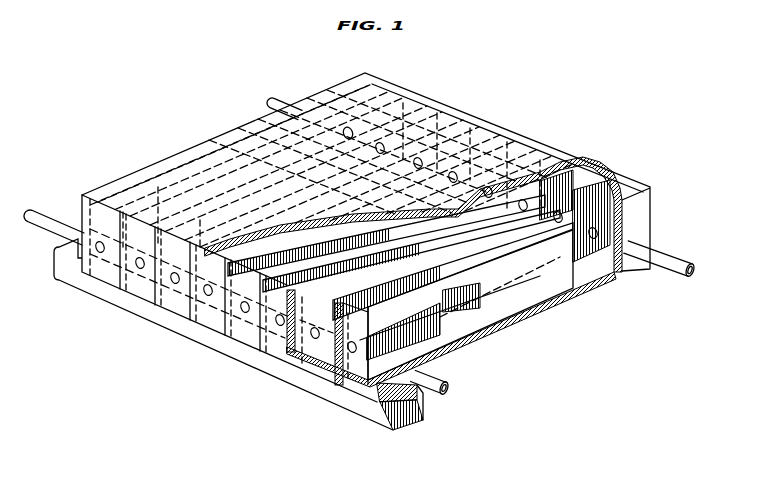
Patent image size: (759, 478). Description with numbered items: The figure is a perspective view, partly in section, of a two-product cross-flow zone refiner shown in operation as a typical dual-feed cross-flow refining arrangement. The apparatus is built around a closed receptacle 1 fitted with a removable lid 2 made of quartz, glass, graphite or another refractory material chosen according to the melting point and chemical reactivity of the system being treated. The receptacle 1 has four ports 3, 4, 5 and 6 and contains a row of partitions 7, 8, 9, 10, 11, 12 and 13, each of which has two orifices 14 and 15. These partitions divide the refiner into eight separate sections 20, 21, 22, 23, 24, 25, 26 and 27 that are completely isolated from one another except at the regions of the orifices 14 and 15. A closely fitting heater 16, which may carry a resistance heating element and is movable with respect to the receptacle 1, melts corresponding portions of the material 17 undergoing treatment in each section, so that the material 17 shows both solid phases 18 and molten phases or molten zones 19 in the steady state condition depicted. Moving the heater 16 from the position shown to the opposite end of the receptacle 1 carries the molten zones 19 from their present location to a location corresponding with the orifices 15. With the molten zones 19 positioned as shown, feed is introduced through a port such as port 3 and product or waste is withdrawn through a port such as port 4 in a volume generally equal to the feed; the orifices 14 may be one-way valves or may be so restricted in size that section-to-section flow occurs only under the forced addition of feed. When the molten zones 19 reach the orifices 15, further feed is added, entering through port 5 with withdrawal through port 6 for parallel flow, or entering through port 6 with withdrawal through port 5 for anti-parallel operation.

The closed receptacle 1 is at (652, 212).
The removable lid 2 is at (497, 222).
The port 3 is at (44, 212).
The port 4 is at (452, 374).
The port 5 is at (285, 100).
The port 6 is at (684, 262).
The partition 7 is at (113, 298).
The partition 8 is at (170, 300).
The partition 9 is at (195, 315).
The partition 10 is at (230, 325).
The partition 11 is at (262, 335).
The partition 12 is at (303, 348).
The partition 13 is at (350, 372).
The orifice 14 is at (208, 247).
The orifice 15 is at (457, 178).
The heater 16 is at (412, 425).
The material undergoing treatment 17 is at (520, 303).
The solid phase 18 is at (420, 262).
The molten zone 19 is at (395, 322).
The section 20 is at (106, 262).
The section 21 is at (148, 283).
The section 22 is at (182, 300).
The section 23 is at (215, 310).
The section 24 is at (248, 325).
The section 25 is at (286, 335).
The section 26 is at (327, 355).
The section 27 is at (370, 372).